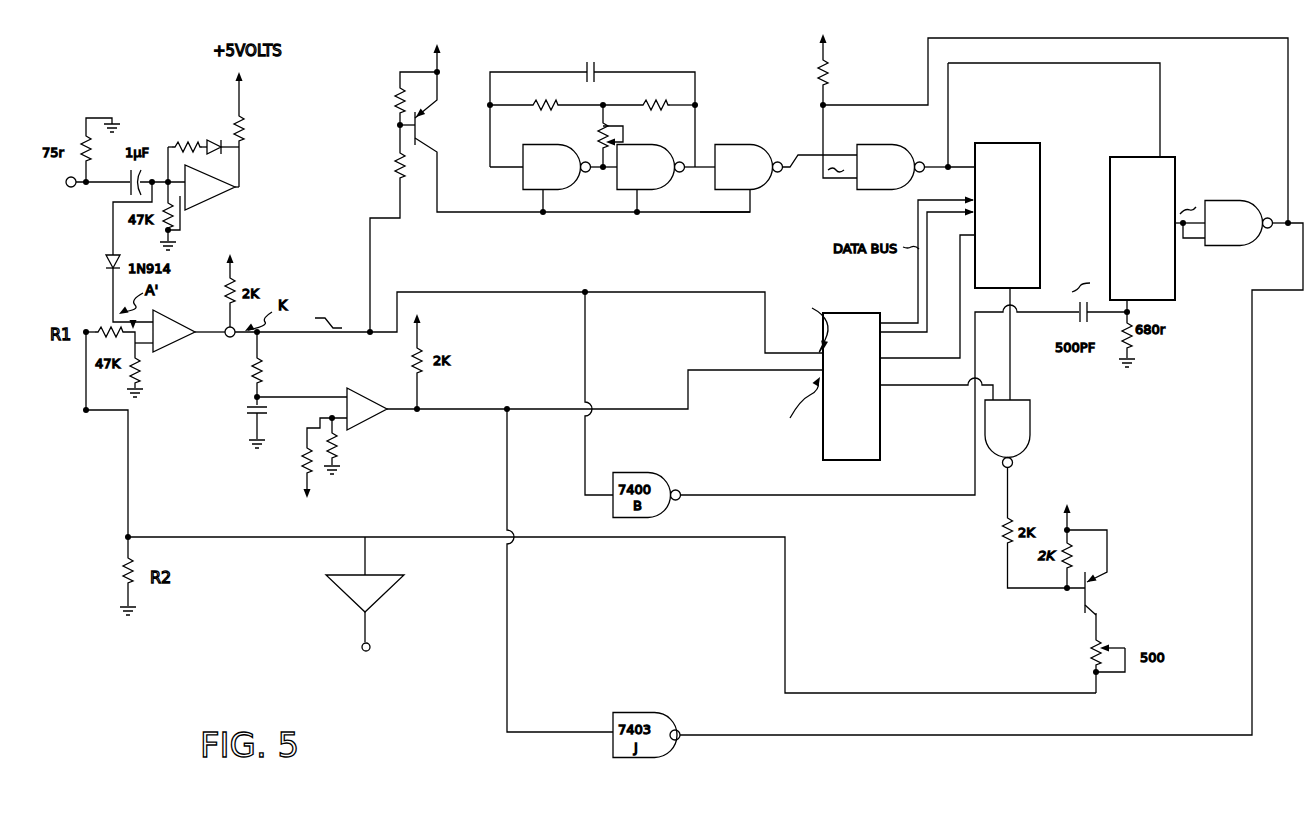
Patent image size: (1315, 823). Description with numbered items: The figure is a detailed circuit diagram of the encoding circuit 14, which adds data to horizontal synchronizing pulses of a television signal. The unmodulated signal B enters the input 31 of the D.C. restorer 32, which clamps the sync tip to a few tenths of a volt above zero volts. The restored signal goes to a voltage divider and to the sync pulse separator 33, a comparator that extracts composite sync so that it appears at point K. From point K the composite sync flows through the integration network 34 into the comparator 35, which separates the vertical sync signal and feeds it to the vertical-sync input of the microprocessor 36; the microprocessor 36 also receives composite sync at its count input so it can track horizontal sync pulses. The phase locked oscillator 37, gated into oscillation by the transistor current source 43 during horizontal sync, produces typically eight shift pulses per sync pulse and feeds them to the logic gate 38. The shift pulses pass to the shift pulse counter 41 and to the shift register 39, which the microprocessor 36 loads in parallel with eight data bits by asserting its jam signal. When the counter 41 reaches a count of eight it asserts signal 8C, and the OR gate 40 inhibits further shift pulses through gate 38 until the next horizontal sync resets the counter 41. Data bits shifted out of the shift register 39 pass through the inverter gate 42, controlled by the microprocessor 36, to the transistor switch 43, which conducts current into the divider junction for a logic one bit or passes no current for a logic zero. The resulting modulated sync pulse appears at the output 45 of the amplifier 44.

The encoding circuit 14 is at (742, 212).
The input 31 is at (66, 197).
The D.C. restorer 32 is at (212, 106).
The sync pulse separator 33 is at (160, 380).
The integration network 34 is at (240, 382).
The comparator 35 is at (374, 444).
The microprocessor 36 is at (864, 427).
The phase locked oscillator 37 is at (702, 66).
The logic gate 38 is at (886, 183).
The shift register 39 is at (1047, 160).
The OR gate 40 is at (1266, 203).
The shift pulse counter 41 is at (1182, 166).
The inverter gate 42 is at (1037, 428).
The transistor switch 43 is at (445, 140).
The amplifier 44 is at (382, 601).
The output 45 is at (357, 652).
The signal 8C is at (1188, 253).